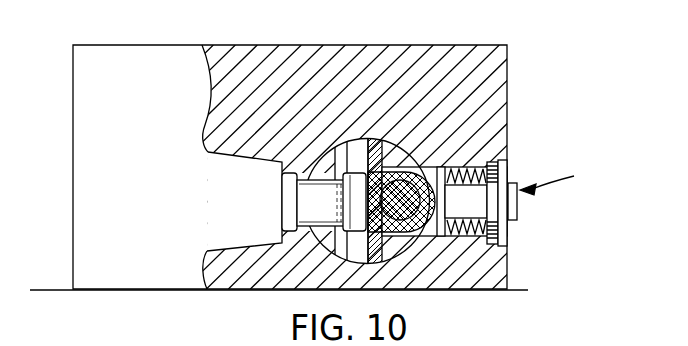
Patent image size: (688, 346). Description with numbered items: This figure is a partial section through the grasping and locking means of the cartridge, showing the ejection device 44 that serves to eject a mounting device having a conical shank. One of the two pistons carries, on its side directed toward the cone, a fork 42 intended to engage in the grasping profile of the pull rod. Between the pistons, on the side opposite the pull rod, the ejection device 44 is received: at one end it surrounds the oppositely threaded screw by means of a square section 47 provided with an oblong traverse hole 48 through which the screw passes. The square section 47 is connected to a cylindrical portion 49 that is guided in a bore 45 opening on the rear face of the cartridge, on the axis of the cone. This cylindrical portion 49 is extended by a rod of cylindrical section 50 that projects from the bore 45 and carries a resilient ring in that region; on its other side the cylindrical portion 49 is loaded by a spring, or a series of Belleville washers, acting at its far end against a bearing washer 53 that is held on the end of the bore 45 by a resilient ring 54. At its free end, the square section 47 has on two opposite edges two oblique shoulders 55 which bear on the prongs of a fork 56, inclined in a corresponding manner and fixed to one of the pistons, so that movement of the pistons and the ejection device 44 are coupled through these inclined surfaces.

The fork 42 is at (322, 237).
The ejection device 44 is at (560, 178).
The bore 45 is at (458, 238).
The square section 47 is at (415, 170).
The oblong traverse hole 48 is at (439, 168).
The cylindrical portion 49 is at (466, 168).
The rod of cylindrical section 50 is at (483, 198).
The bearing washer 53 is at (500, 233).
The resilient ring 54 is at (495, 242).
The oblique shoulders 55 is at (386, 163).
The fork 56 is at (362, 166).